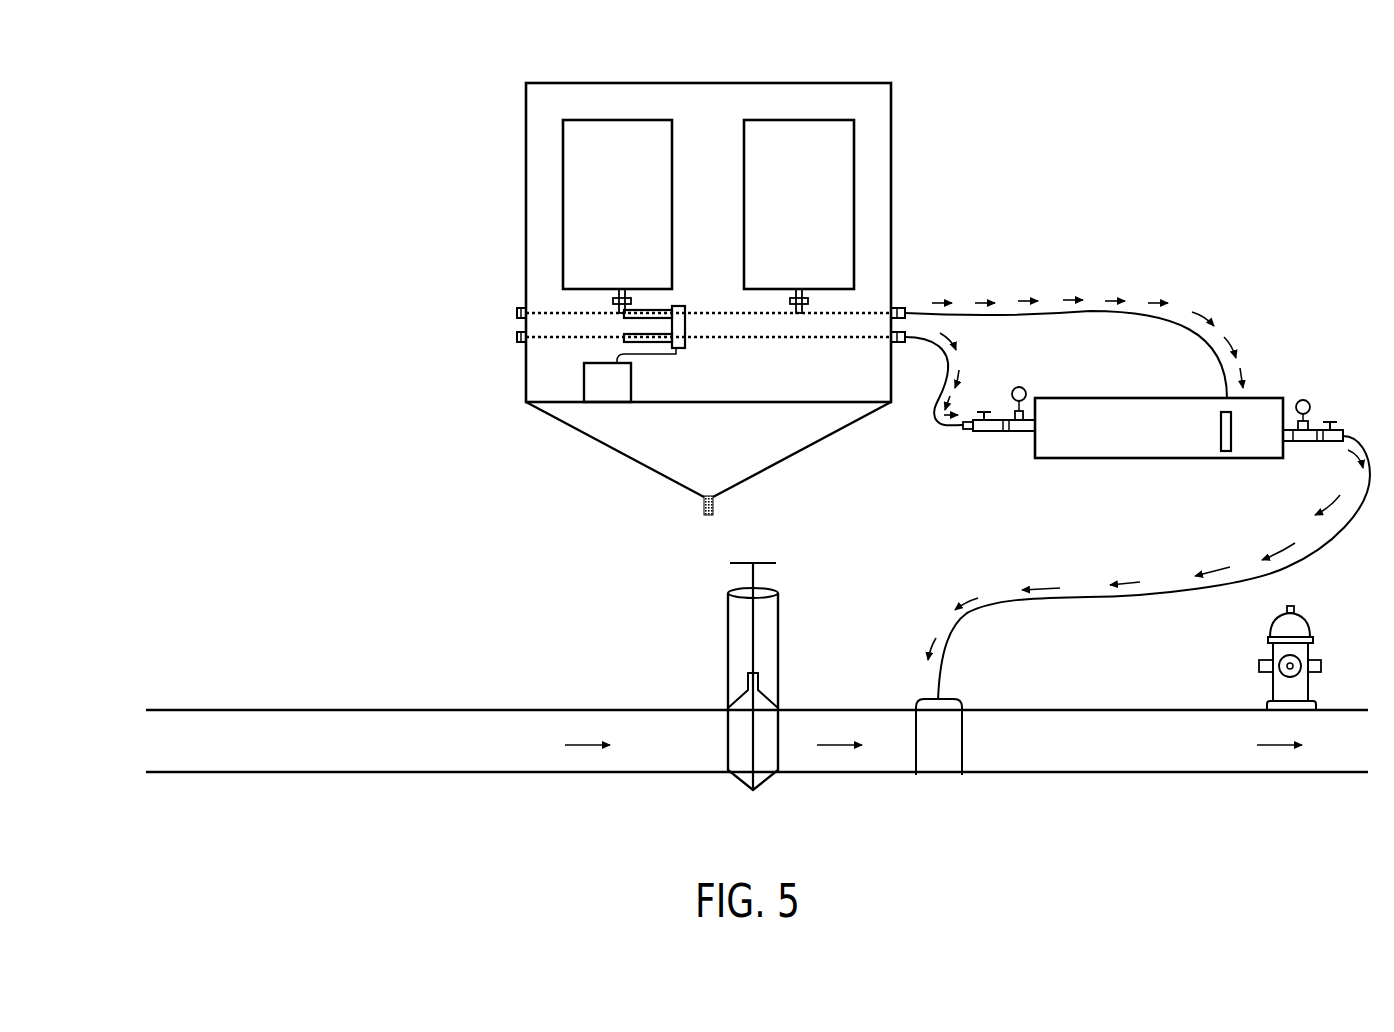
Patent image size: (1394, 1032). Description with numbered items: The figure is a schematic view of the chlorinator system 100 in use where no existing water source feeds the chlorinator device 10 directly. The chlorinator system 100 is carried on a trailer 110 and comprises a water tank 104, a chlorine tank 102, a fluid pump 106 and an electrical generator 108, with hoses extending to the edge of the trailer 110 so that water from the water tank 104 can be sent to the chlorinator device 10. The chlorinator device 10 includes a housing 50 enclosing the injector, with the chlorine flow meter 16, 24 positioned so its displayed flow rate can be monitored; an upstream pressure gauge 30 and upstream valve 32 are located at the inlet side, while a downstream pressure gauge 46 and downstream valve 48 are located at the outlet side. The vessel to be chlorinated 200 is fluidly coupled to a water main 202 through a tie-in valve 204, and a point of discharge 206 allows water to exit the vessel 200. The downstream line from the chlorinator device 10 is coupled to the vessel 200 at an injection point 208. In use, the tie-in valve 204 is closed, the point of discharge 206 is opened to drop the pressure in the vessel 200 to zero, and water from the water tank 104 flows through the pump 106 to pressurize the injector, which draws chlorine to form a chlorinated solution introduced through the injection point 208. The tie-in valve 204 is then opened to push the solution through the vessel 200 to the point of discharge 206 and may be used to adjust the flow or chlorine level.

The chlorinator device 10 is at (1312, 325).
The chlorine flow meter 16 is at (1207, 463).
The adjustable flow meter 24 is at (1221, 440).
The upstream pressure gauge 30 is at (1018, 433).
The upstream valve 32 is at (985, 433).
The downstream pressure gauge 46 is at (1303, 398).
The downstream valve 48 is at (1333, 425).
The housing 50 is at (1100, 460).
The chlorinator system 100 is at (352, 113).
The chlorine tank 102 is at (786, 133).
The water tank 104 is at (612, 133).
The fluid pump 106 is at (681, 307).
The electrical generator 108 is at (598, 390).
The trailer 110 is at (891, 183).
The vessel to be chlorinated 200 is at (1125, 755).
The water main 202 is at (378, 766).
The tie-in valve 204 is at (748, 793).
The point of discharge 206 is at (1307, 625).
The injection point 208 is at (945, 700).